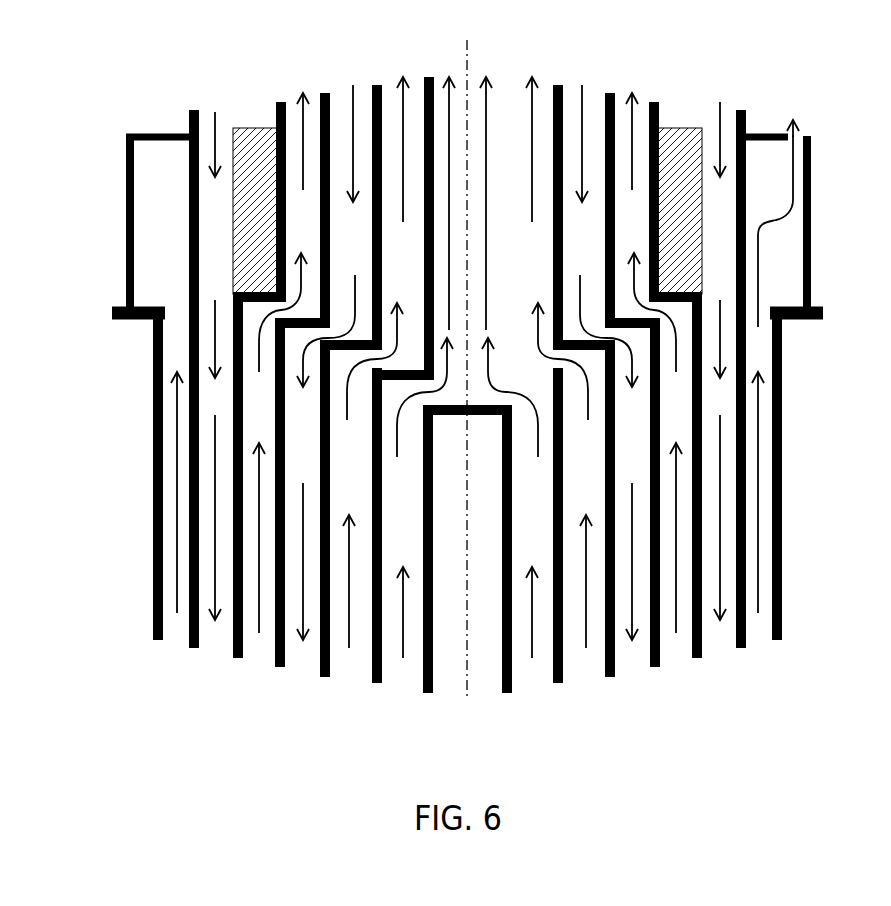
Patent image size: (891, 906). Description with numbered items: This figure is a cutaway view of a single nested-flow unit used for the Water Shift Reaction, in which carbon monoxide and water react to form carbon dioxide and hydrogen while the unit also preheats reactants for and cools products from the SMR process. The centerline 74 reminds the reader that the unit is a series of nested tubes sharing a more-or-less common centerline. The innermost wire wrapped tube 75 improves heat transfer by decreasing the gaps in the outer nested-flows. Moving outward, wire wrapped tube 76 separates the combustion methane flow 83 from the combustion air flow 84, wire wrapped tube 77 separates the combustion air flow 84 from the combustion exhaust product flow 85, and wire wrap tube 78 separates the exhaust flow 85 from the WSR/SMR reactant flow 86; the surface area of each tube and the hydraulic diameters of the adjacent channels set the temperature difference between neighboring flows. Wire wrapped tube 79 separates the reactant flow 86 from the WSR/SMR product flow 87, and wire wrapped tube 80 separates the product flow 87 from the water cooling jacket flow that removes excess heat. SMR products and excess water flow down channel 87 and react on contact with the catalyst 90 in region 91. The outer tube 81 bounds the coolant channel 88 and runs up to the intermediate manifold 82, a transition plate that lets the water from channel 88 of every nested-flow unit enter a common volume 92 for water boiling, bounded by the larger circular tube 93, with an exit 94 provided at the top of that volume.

The centerline 74 is at (469, 43).
The wire wrapped tube 75 is at (508, 696).
The wire wrapped tube 76 is at (562, 686).
The wire wrapped tube 77 is at (610, 675).
The wire wrap tube 78 is at (657, 671).
The wire wrapped tube 79 is at (700, 660).
The wire wrapped tube 80 is at (745, 656).
The tube 81 is at (781, 643).
The intermediate manifold 82 is at (449, 690).
The combustion methane flow 83 is at (400, 686).
The combustion air flow 84 is at (348, 678).
The combustion exhaust product flow 85 is at (302, 668).
The WSR/SMR reactant flow 86 is at (258, 655).
The WSR/SMR product flow 87 is at (215, 646).
The coolant channel 88 is at (177, 635).
The catalyst 90 is at (253, 207).
The region 91 is at (723, 224).
The common volume 92 is at (781, 246).
The larger circular tube 93 is at (813, 276).
The exit 94 is at (801, 116).